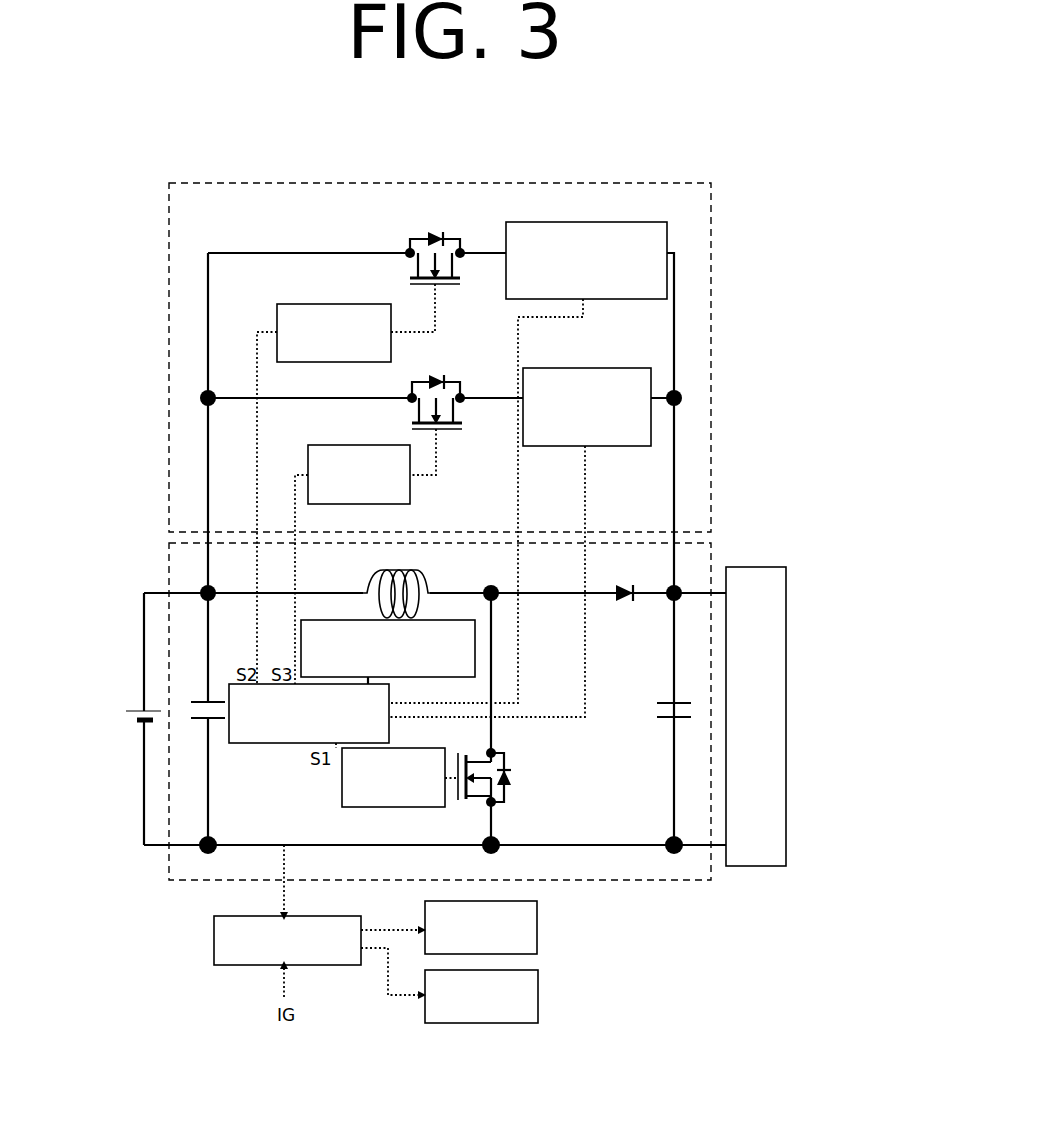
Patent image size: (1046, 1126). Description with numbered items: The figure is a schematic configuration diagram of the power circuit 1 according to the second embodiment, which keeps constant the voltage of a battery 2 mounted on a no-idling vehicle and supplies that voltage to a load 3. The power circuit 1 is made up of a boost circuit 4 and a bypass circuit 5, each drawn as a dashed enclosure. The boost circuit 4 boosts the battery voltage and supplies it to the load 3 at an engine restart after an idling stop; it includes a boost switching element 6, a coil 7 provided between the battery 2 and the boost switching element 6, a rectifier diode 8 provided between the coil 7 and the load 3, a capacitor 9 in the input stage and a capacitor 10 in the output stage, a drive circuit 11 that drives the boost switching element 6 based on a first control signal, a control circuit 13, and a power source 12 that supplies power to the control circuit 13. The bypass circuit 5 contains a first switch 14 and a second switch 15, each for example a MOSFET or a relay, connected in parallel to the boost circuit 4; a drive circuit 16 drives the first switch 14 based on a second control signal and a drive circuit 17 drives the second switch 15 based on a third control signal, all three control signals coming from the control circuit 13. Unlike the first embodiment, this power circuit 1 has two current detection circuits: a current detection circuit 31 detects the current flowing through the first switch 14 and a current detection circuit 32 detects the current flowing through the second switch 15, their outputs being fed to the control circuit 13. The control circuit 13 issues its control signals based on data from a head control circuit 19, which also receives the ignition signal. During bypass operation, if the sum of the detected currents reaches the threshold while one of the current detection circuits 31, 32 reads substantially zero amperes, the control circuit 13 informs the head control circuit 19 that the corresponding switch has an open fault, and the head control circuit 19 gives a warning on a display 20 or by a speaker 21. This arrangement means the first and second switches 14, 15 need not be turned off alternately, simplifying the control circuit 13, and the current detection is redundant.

The power circuit 1 is at (444, 176).
The battery 2 is at (137, 709).
The load 3 is at (754, 567).
The boost circuit 4 is at (648, 880).
The bypass circuit 5 is at (711, 360).
The boost switching element 6 is at (487, 752).
The coil 7 is at (433, 578).
The rectifier diode 8 is at (620, 589).
The capacitor 9 is at (205, 702).
The capacitor 10 is at (665, 703).
The drive circuit 11 is at (395, 807).
The power source 12 is at (440, 620).
The control circuit 13 is at (392, 696).
The first switch 14 is at (462, 273).
The second switch 15 is at (462, 416).
The drive circuit 16 is at (393, 349).
The drive circuit 17 is at (412, 494).
The head control circuit 19 is at (214, 940).
The display 20 is at (537, 929).
The speaker 21 is at (538, 994).
The current detection circuit 31 is at (588, 222).
The current detection circuit 32 is at (586, 368).